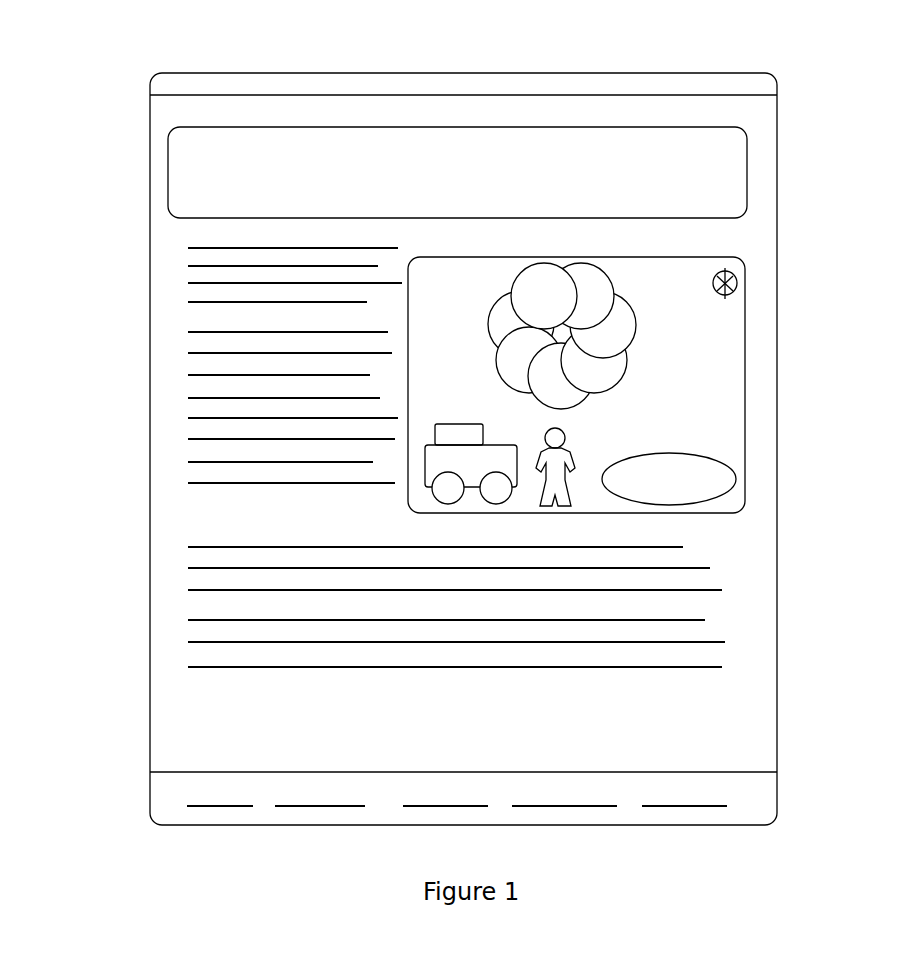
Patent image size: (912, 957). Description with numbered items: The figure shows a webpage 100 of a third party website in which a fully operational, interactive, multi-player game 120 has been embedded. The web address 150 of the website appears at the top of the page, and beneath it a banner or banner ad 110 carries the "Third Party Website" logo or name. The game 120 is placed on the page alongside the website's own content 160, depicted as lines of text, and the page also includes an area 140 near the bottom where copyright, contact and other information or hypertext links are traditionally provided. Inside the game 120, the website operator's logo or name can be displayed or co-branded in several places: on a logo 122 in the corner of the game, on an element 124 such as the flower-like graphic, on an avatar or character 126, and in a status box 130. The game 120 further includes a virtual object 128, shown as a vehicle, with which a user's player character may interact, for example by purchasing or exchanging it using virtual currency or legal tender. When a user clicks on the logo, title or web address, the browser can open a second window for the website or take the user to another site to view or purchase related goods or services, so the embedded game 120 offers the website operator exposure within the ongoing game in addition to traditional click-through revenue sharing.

The webpage 100 is at (463, 426).
The banner ad 110 is at (747, 165).
The game 120 is at (745, 317).
The logo 122 is at (742, 266).
The element 124 is at (633, 352).
The character 126 is at (573, 461).
The virtual object 128 is at (497, 489).
The status box 130 is at (737, 478).
The area 140 is at (745, 802).
The web address 150 is at (153, 82).
The content 160 is at (184, 237).